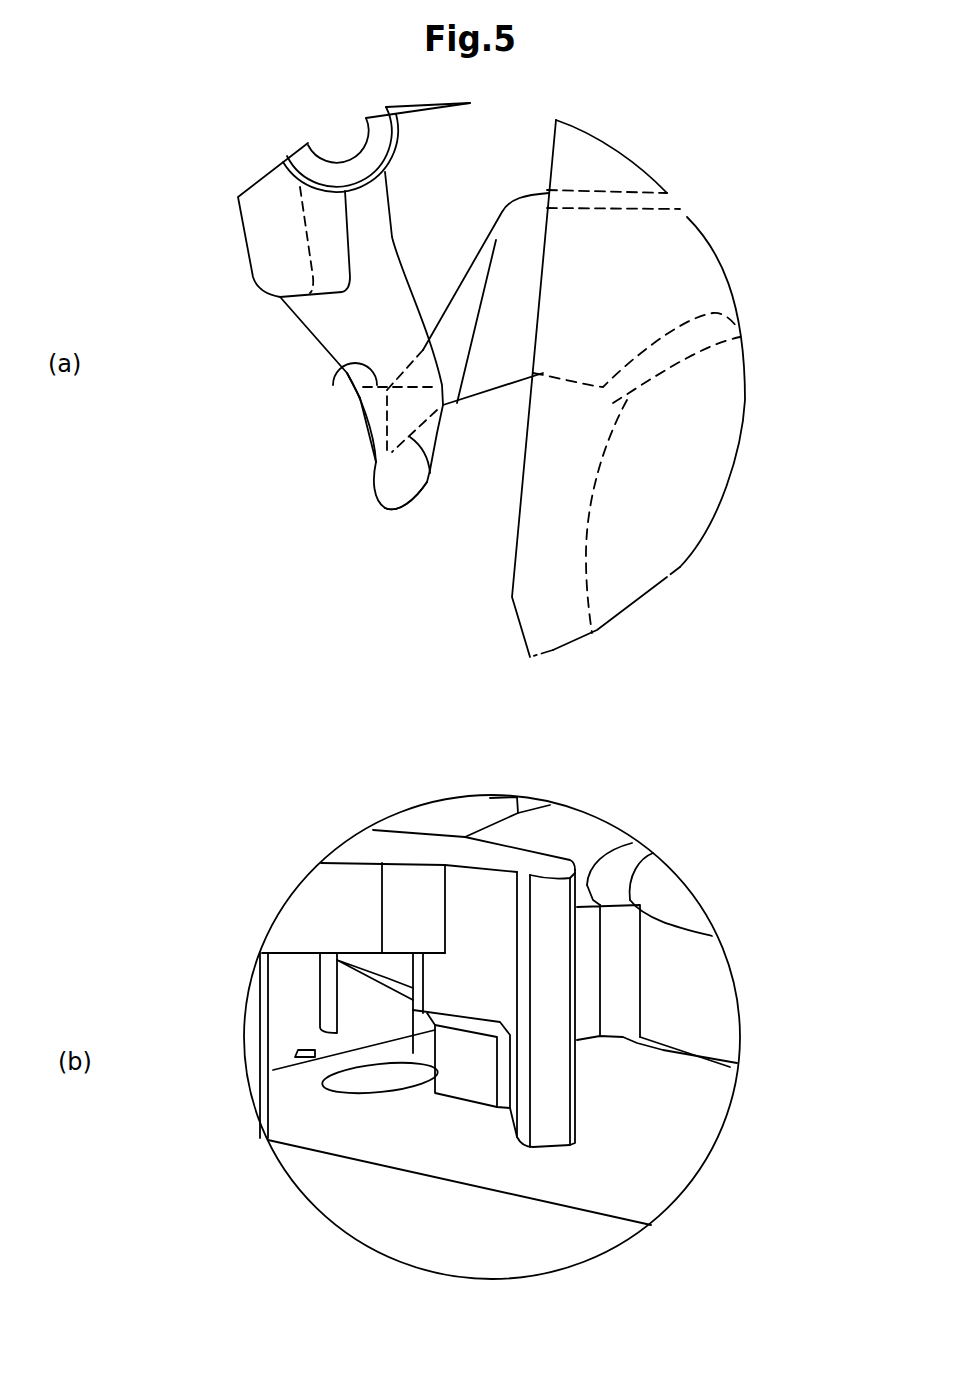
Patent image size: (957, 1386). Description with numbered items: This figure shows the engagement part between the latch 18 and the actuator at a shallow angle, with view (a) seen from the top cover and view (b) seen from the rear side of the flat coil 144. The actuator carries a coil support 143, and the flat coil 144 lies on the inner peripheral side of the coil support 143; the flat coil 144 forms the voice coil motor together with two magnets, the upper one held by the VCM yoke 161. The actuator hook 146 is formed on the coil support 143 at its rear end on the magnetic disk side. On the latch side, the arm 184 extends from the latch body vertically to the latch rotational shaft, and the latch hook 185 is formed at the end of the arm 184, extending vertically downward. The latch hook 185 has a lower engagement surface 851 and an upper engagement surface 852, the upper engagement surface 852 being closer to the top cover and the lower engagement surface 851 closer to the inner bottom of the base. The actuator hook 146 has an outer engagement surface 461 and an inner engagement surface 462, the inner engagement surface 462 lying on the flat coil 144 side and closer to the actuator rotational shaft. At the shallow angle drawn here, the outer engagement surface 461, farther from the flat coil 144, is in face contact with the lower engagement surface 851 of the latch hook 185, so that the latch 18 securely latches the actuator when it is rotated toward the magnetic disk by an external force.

The latch 18 is at (237, 248).
The coil support 143 is at (663, 255).
The flat coil 144 is at (583, 577).
The actuator hook 146 is at (495, 232).
The VCM yoke 161 is at (517, 617).
The arm 184 is at (317, 348).
The latch hook 185 is at (352, 478).
The outer engagement surface 461 is at (415, 500).
The inner engagement surface 462 is at (513, 387).
The lower engagement surface 851 is at (368, 430).
The upper engagement surface 852 is at (335, 390).